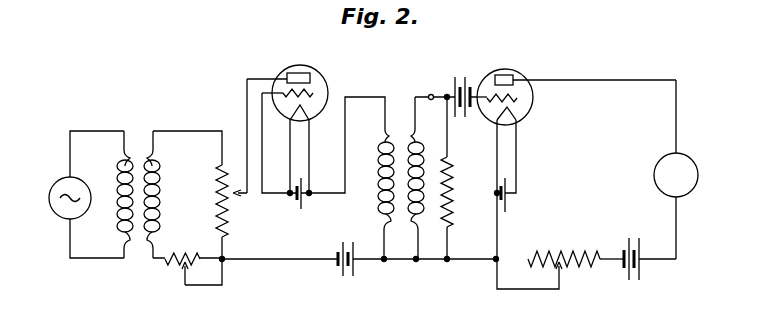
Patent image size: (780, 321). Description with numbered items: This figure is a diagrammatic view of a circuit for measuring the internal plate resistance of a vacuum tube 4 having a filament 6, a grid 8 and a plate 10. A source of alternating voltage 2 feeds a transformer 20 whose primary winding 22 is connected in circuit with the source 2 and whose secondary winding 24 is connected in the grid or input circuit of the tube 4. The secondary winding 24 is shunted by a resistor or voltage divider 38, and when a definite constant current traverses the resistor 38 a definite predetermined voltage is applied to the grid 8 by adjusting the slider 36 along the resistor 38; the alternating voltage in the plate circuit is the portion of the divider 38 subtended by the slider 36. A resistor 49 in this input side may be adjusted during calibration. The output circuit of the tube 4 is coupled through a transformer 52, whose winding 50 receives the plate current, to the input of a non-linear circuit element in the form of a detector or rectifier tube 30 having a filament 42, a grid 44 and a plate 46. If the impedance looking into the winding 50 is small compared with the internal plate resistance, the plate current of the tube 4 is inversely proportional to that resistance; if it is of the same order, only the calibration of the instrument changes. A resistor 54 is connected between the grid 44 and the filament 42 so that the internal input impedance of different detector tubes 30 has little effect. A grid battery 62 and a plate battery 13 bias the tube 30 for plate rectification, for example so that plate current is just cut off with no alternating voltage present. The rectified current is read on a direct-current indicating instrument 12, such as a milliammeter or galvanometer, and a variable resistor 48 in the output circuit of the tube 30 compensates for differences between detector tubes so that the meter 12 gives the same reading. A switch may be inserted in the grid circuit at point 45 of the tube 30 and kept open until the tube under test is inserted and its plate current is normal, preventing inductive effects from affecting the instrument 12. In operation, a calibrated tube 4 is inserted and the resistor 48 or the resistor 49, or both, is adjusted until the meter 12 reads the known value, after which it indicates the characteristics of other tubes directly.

The source of alternating voltage 2 is at (49, 195).
The transformer 20 is at (136, 173).
The primary winding 22 is at (117, 168).
The secondary winding 24 is at (161, 168).
The slider 36 is at (221, 203).
The resistor or voltage divider 38 is at (214, 223).
The resistor 49 is at (174, 268).
The vacuum tube 4 is at (316, 123).
The plate 10 is at (300, 73).
The grid 8 is at (313, 93).
The filament 6 is at (310, 110).
The winding 50 is at (378, 183).
The transformer 52 is at (405, 126).
The point in grid circuit 45 is at (431, 100).
The grid battery 62 is at (460, 77).
The resistor 54 is at (456, 190).
The detector or rectifier tube 30 is at (576, 163).
The plate 46 is at (503, 75).
The grid 44 is at (517, 98).
The filament 42 is at (515, 110).
The direct-current indicating instrument 12 is at (691, 158).
The variable resistor 48 is at (576, 268).
The plate battery 13 is at (642, 283).